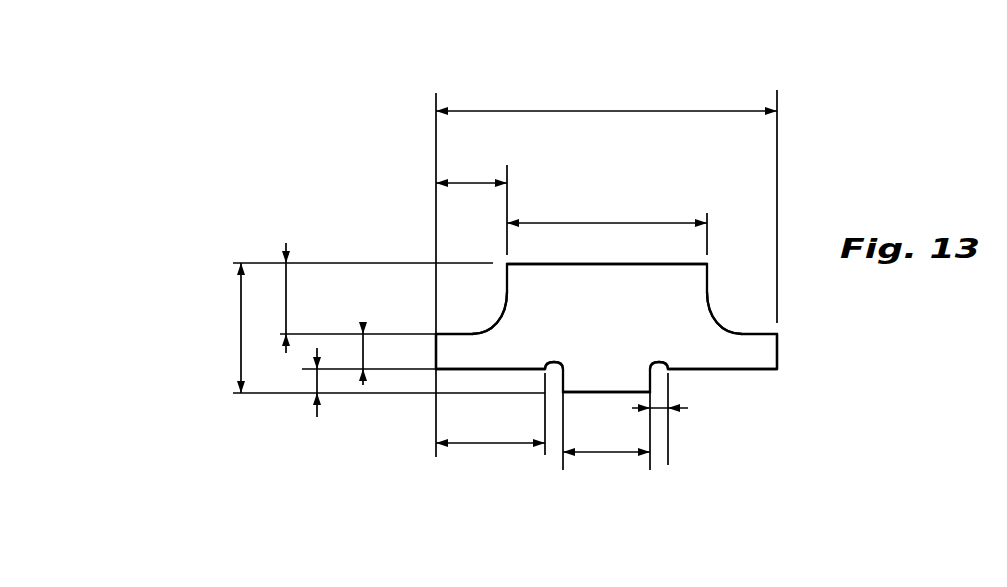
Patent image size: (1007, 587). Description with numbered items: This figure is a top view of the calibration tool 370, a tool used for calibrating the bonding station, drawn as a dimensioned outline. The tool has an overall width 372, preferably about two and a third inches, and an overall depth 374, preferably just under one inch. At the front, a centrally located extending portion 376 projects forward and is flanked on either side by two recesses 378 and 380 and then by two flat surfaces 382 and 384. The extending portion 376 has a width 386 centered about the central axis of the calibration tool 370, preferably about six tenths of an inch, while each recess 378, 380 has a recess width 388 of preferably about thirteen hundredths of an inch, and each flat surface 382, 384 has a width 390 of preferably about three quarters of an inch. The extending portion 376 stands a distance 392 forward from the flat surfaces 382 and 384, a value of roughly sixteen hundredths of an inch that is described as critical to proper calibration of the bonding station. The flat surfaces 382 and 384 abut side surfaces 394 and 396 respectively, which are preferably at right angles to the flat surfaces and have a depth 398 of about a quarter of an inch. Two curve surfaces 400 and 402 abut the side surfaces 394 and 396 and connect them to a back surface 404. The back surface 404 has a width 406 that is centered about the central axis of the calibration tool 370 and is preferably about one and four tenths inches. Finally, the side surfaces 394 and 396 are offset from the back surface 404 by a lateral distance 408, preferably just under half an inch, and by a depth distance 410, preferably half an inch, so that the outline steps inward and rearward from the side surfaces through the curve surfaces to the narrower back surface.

The calibration tool 370 is at (372, 202).
The width 372 is at (583, 109).
The depth 374 is at (240, 327).
The extending portion 376 is at (579, 404).
The recess 378 is at (560, 360).
The recess 380 is at (665, 360).
The flat surface 382 is at (456, 382).
The flat surface 384 is at (757, 378).
The width of extending portion 386 is at (605, 456).
The recess width 388 is at (661, 410).
The width of flat surface 390 is at (487, 446).
The distance 392 is at (316, 380).
The side surface 394 is at (424, 352).
The side surface 396 is at (788, 341).
The depth of side surface 398 is at (363, 343).
The curve surface 400 is at (491, 319).
The curve surface 402 is at (732, 302).
The back surface 404 is at (605, 261).
The width of back surface 406 is at (595, 222).
The lateral distance 408 is at (462, 176).
The depth distance 410 is at (286, 290).